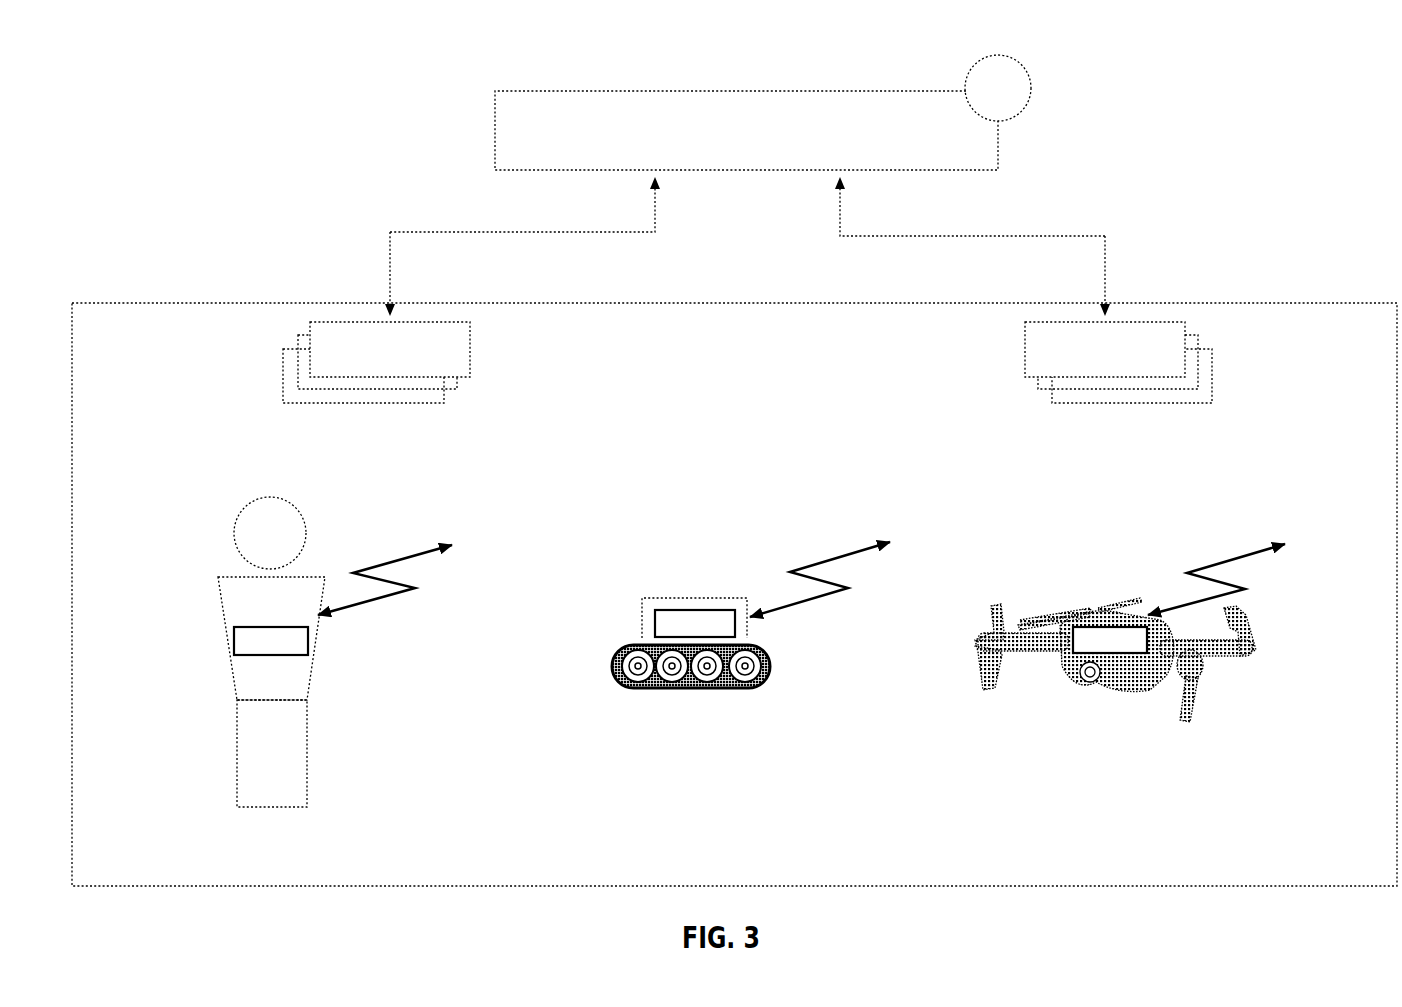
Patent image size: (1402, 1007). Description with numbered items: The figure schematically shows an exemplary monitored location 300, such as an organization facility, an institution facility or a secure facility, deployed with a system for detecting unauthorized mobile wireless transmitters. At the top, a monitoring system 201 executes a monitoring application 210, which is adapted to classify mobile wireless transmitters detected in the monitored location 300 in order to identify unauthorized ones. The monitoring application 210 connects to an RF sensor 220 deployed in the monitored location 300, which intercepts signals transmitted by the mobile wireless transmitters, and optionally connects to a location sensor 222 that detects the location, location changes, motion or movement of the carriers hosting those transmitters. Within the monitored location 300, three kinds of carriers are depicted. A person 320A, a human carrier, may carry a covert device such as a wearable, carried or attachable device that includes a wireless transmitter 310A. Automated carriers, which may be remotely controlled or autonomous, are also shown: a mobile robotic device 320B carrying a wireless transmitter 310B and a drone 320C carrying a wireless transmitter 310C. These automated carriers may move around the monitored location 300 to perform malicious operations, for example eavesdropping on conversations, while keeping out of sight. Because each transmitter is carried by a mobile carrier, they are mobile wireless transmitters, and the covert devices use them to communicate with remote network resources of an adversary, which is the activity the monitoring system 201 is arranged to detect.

The monitoring system 201 is at (746, 130).
The monitoring application 210 is at (925, 52).
The RF sensor 220 is at (376, 362).
The location sensor 222 is at (1118, 362).
The monitored location 300 is at (734, 594).
The person 320A is at (226, 561).
The wireless transmitter 310A is at (271, 641).
The mobile robotic device 320B is at (650, 596).
The wireless transmitter 310B is at (695, 623).
The drone 320C is at (1056, 602).
The wireless transmitter 310C is at (1110, 639).